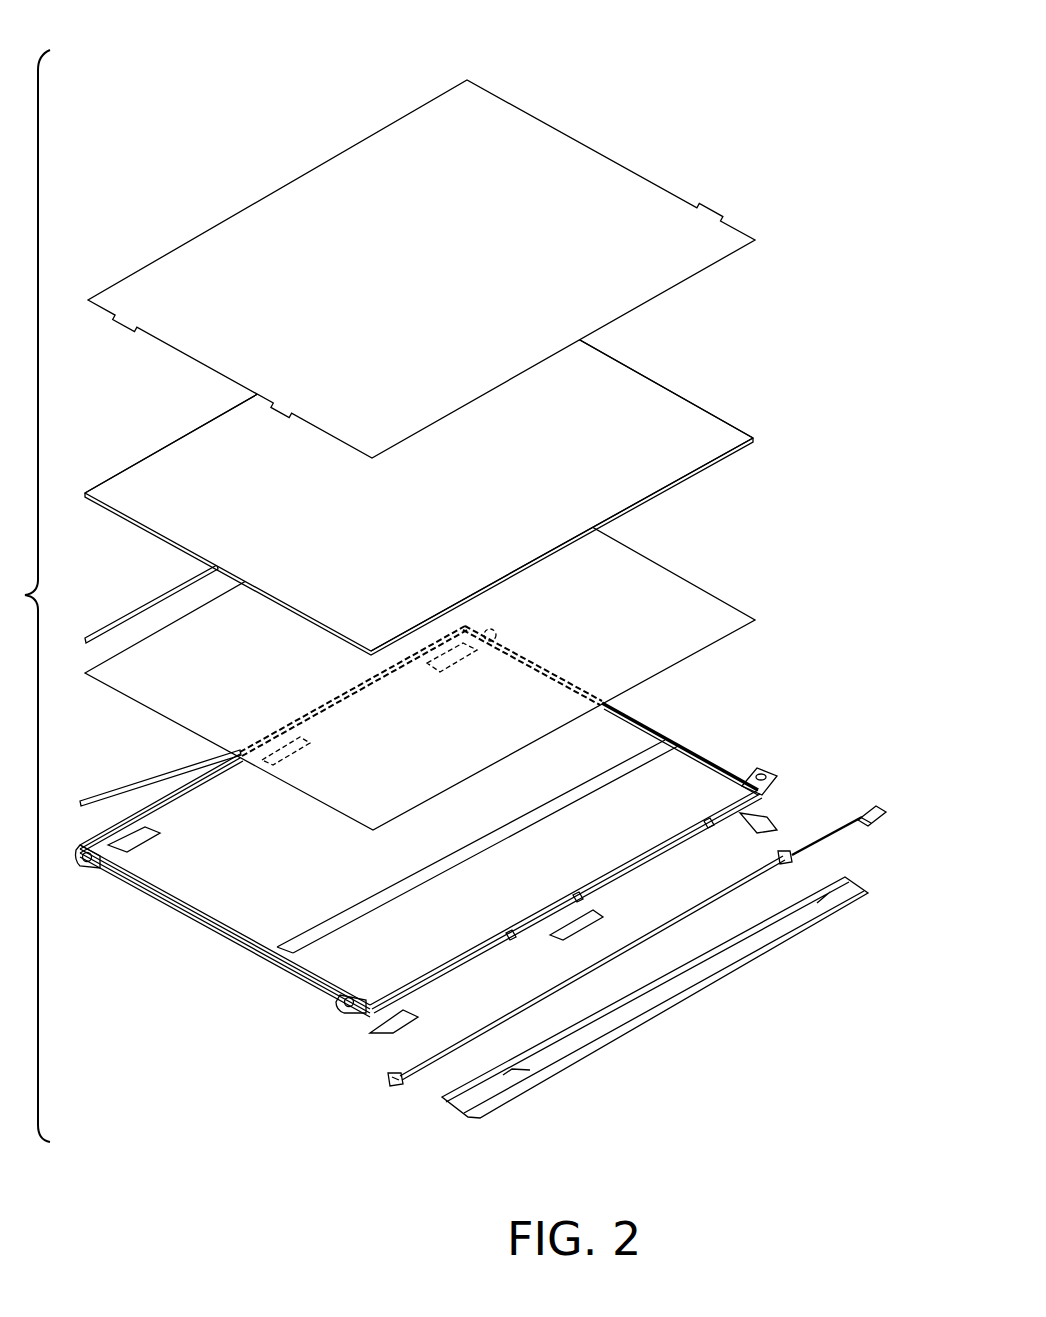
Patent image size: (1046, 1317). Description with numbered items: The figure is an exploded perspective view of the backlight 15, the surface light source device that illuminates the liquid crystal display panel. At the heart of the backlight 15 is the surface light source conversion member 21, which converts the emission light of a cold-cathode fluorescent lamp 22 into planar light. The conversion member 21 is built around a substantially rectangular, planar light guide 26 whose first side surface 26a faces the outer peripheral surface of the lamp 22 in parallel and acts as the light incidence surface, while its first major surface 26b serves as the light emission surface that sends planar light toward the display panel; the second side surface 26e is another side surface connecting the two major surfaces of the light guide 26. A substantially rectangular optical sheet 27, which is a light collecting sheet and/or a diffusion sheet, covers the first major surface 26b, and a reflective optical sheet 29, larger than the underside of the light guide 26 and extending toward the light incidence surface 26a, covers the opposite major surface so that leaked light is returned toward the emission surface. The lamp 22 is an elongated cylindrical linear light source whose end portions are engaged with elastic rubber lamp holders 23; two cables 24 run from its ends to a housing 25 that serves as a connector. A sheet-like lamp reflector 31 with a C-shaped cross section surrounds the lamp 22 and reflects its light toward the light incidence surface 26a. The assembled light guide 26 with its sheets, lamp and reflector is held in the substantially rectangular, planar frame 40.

The backlight 15 is at (649, 76).
The optical sheet 27 is at (733, 224).
The light guide 26 is at (430, 465).
The first side surface 26a is at (705, 474).
The first major surface 26b is at (625, 390).
The second side surface 26e is at (148, 455).
The surface light source conversion member 21 is at (479, 552).
The optical sheet 29 is at (724, 594).
The frame 40 is at (699, 748).
The cold-cathode fluorescent lamp 22 is at (672, 936).
The lamp holder 23 is at (779, 856).
The cable 24 is at (790, 842).
The housing 25 is at (872, 806).
The lamp reflector 31 is at (730, 972).